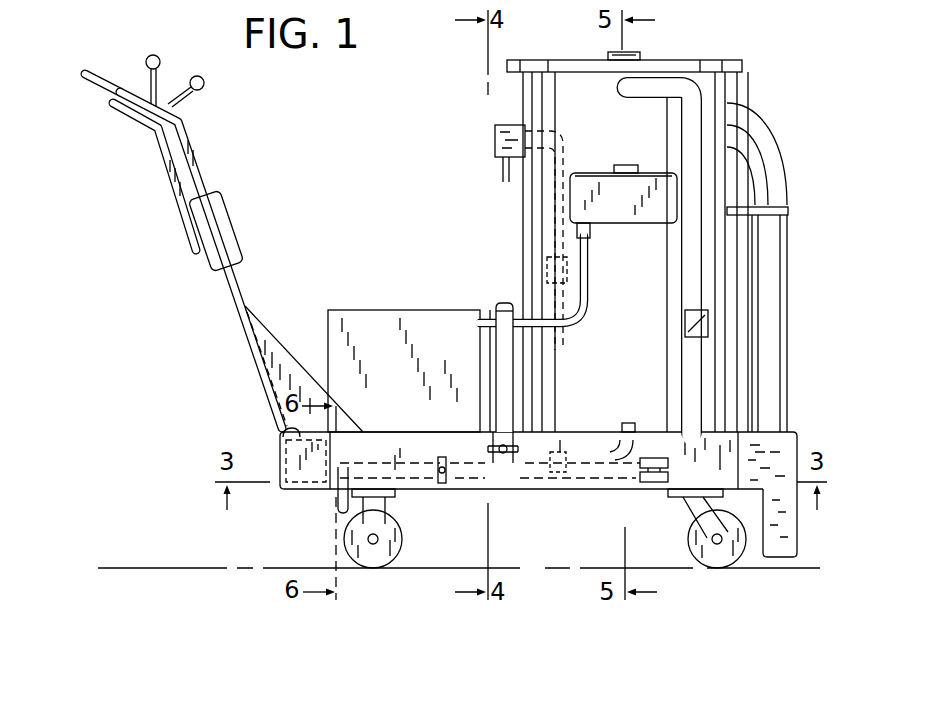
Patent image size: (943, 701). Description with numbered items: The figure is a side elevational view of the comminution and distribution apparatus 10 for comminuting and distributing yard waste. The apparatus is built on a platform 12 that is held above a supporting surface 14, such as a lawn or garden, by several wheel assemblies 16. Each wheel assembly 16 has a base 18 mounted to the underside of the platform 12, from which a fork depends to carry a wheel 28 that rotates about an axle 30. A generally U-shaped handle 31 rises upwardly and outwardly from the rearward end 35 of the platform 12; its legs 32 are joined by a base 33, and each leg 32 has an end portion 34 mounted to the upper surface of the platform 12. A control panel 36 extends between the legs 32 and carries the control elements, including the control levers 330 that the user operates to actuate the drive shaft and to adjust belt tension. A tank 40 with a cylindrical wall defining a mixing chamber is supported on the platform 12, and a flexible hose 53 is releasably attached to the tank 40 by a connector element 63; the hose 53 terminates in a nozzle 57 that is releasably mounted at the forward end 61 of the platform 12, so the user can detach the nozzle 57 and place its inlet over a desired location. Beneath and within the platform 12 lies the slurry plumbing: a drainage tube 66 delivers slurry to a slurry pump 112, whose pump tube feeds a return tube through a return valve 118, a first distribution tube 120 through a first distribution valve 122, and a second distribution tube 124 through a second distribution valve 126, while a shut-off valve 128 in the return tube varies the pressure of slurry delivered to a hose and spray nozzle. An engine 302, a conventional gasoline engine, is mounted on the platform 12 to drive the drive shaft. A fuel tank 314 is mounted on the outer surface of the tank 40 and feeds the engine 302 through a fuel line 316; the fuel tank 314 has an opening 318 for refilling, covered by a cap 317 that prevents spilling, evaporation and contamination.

The comminution and distribution apparatus 10 is at (165, 316).
The platform 12 is at (274, 438).
The supporting surface 14 is at (193, 567).
The wheel assembly 16 is at (406, 518).
The base 18 is at (397, 493).
The wheel 28 is at (402, 549).
The axle 30 is at (372, 546).
The handle 31 is at (108, 64).
The leg 32 is at (230, 228).
The base 33 is at (83, 70).
The end portion 34 is at (275, 427).
The rearward end 35 is at (278, 462).
The control panel 36 is at (203, 178).
The tank 40 is at (745, 92).
The flexible hose 53 is at (772, 307).
The nozzle 57 is at (810, 538).
The forward end 61 is at (752, 458).
The connector element 63 is at (781, 205).
The drainage tube 66 is at (608, 445).
The slurry pump 112 is at (557, 472).
The return valve 118 is at (653, 455).
The first distribution tube 120 is at (500, 300).
The first distribution valve 122 is at (491, 442).
The second distribution tube 124 is at (327, 507).
The second distribution valve 126 is at (437, 457).
The shut-off valve 128 is at (684, 326).
The engine 302 is at (362, 316).
The fuel tank 314 is at (603, 222).
The fuel line 316 is at (590, 268).
The cap 317 is at (622, 165).
The opening 318 is at (608, 172).
The control lever 330 is at (155, 56).